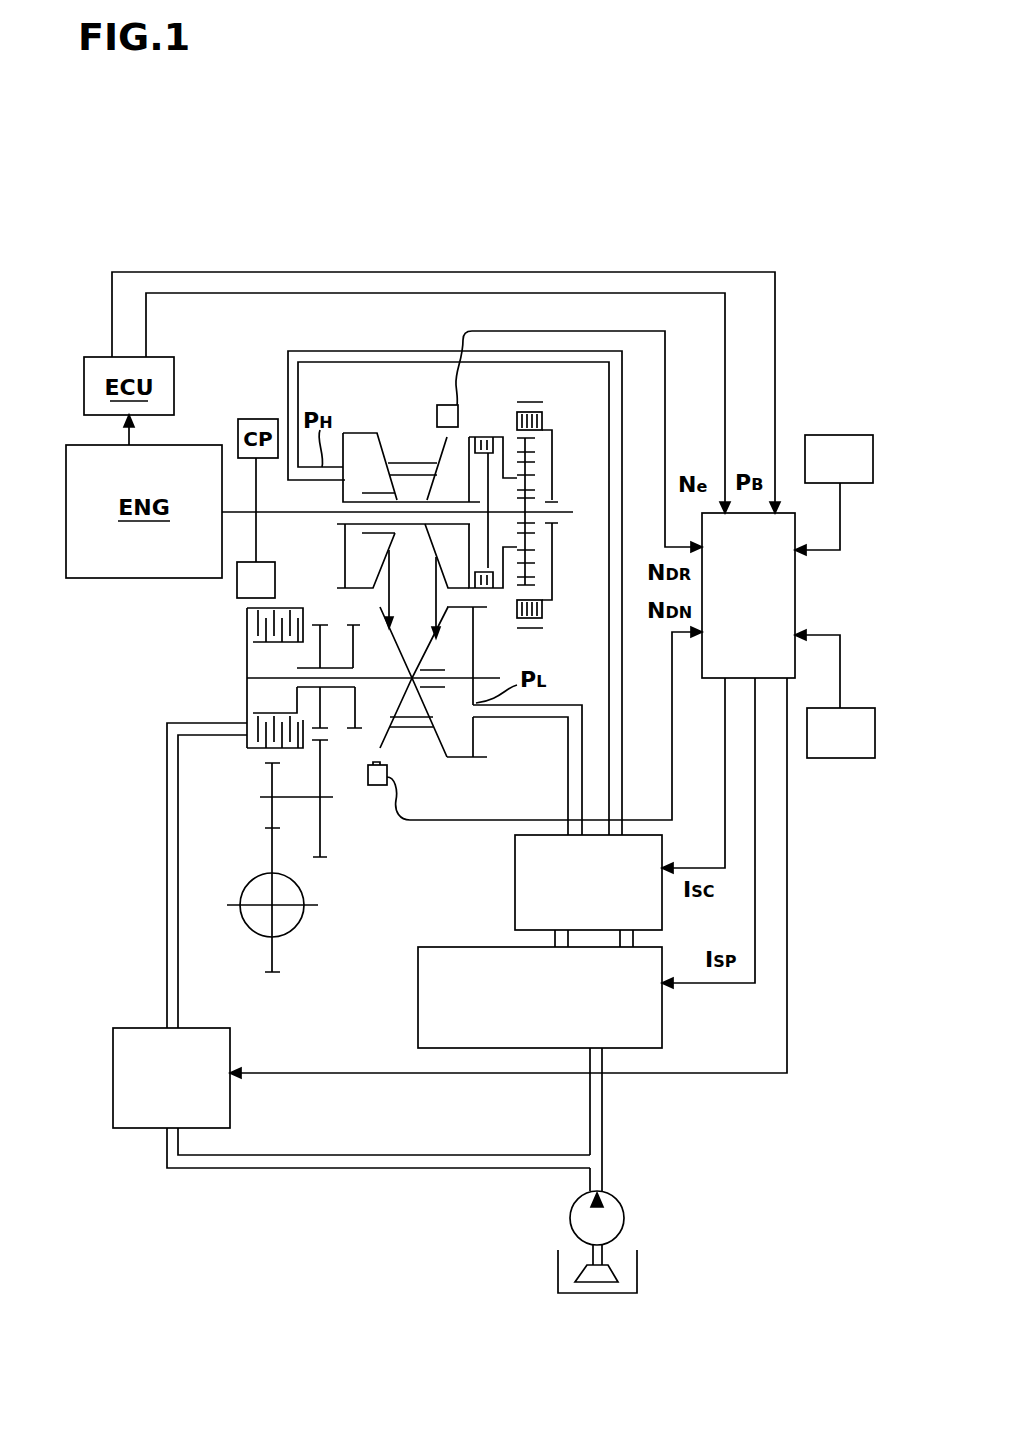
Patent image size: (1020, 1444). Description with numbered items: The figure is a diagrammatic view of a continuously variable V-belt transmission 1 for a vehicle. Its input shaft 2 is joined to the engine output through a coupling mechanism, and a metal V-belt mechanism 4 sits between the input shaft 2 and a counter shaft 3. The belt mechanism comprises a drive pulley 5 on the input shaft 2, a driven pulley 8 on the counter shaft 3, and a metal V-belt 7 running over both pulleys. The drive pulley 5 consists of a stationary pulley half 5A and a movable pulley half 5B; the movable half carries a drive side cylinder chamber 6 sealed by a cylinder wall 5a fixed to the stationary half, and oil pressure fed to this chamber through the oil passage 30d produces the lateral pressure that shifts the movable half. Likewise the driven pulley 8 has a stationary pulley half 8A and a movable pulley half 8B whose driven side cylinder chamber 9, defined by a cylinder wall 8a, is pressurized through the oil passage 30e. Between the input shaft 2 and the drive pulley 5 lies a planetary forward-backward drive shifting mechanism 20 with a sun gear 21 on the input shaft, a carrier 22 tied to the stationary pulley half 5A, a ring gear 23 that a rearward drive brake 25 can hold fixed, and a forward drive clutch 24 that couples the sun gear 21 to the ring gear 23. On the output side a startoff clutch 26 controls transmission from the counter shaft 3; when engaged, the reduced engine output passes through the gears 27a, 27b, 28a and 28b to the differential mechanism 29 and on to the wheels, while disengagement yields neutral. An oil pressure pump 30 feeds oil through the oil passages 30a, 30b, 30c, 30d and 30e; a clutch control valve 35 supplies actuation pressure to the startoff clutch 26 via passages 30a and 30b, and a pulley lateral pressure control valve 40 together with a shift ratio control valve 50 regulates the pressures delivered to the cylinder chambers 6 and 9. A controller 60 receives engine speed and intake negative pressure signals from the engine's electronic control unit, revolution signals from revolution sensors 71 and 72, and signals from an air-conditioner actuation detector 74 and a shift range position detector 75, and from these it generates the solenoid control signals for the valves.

The continuously variable V-belt transmission 1 is at (542, 261).
The input shaft 2 is at (573, 512).
The counter shaft 3 is at (522, 655).
The metal V-belt mechanism 4 is at (601, 516).
The drive pulley 5 is at (446, 444).
The stationary pulley half 5A is at (447, 455).
The movable pulley half 5B is at (399, 480).
The cylinder wall 5a is at (343, 487).
The drive side cylinder chamber 6 is at (411, 467).
The metal V-belt 7 is at (412, 595).
The driven pulley 8 is at (440, 719).
The stationary pulley half 8A is at (373, 715).
The movable pulley half 8B is at (467, 757).
The cylinder wall 8a is at (473, 743).
The driven side cylinder chamber 9 is at (455, 717).
The forward-backward drive shifting mechanism 20 is at (552, 408).
The sun gear 21 is at (525, 513).
The carrier 22 is at (513, 553).
The ring gear 23 is at (542, 607).
The forward drive clutch 24 is at (492, 437).
The rearward drive brake 25 is at (548, 417).
The startoff clutch 26 is at (302, 608).
The gear 27a is at (307, 632).
The gear 27b is at (330, 862).
The gear 28a is at (275, 762).
The gear 28b is at (278, 975).
The differential mechanism 29 is at (308, 915).
The oil pressure pump 30 is at (624, 1222).
The oil passage 30a is at (353, 1155).
The oil passage 30b is at (168, 912).
The oil passage 30c is at (603, 1153).
The oil passage 30d is at (362, 351).
The oil passage 30e is at (579, 704).
The clutch control valve 35 is at (110, 1075).
The pulley lateral pressure control valve 40 is at (477, 947).
The shift ratio control valve 50 is at (515, 875).
The controller 60 is at (795, 595).
The revolution sensor 71 is at (459, 405).
The revolution sensor 72 is at (390, 773).
The air-conditioner actuation detector 74 is at (845, 435).
The shift range position detector 75 is at (846, 760).